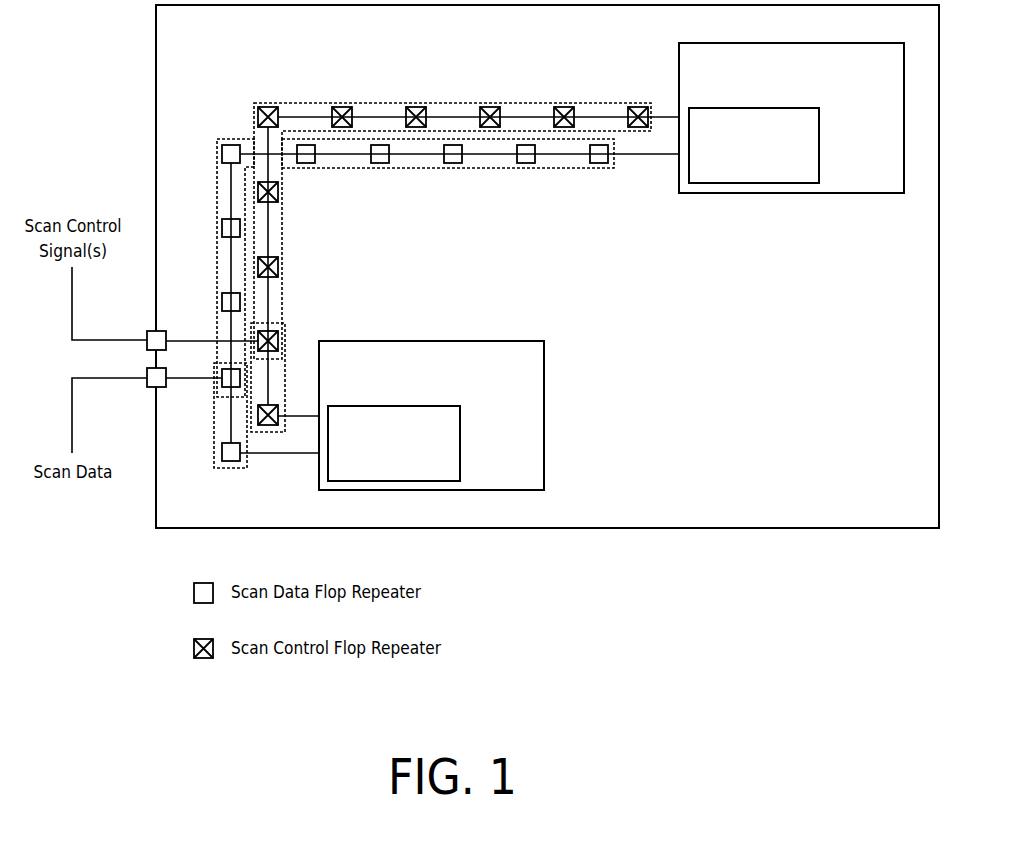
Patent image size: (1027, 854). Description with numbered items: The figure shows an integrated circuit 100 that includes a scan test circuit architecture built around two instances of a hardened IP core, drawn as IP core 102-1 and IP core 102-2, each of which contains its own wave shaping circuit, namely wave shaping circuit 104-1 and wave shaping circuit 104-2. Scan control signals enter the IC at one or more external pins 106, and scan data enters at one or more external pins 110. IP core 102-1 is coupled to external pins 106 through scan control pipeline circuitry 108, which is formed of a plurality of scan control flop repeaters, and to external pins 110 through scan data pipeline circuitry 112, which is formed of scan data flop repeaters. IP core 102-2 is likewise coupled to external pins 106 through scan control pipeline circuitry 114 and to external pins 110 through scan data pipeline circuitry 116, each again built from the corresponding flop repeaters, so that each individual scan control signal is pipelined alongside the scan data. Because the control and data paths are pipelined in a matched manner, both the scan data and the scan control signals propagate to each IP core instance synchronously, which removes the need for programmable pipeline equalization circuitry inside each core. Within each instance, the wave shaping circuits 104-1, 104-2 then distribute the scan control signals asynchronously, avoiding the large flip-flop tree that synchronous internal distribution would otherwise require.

The integrated circuit 100 is at (547, 266).
The IP core 102-1 is at (791, 118).
The IP core 102-2 is at (431, 415).
The wave shaping circuit 104-1 is at (754, 145).
The wave shaping circuit 104-2 is at (394, 443).
The external pin 106 is at (153, 331).
The scan control pipeline circuitry 108 is at (398, 103).
The external pin 110 is at (153, 388).
The scan data pipeline circuitry 112 is at (230, 139).
The scan control pipeline circuitry 114 is at (283, 405).
The scan data pipeline circuitry 116 is at (221, 470).